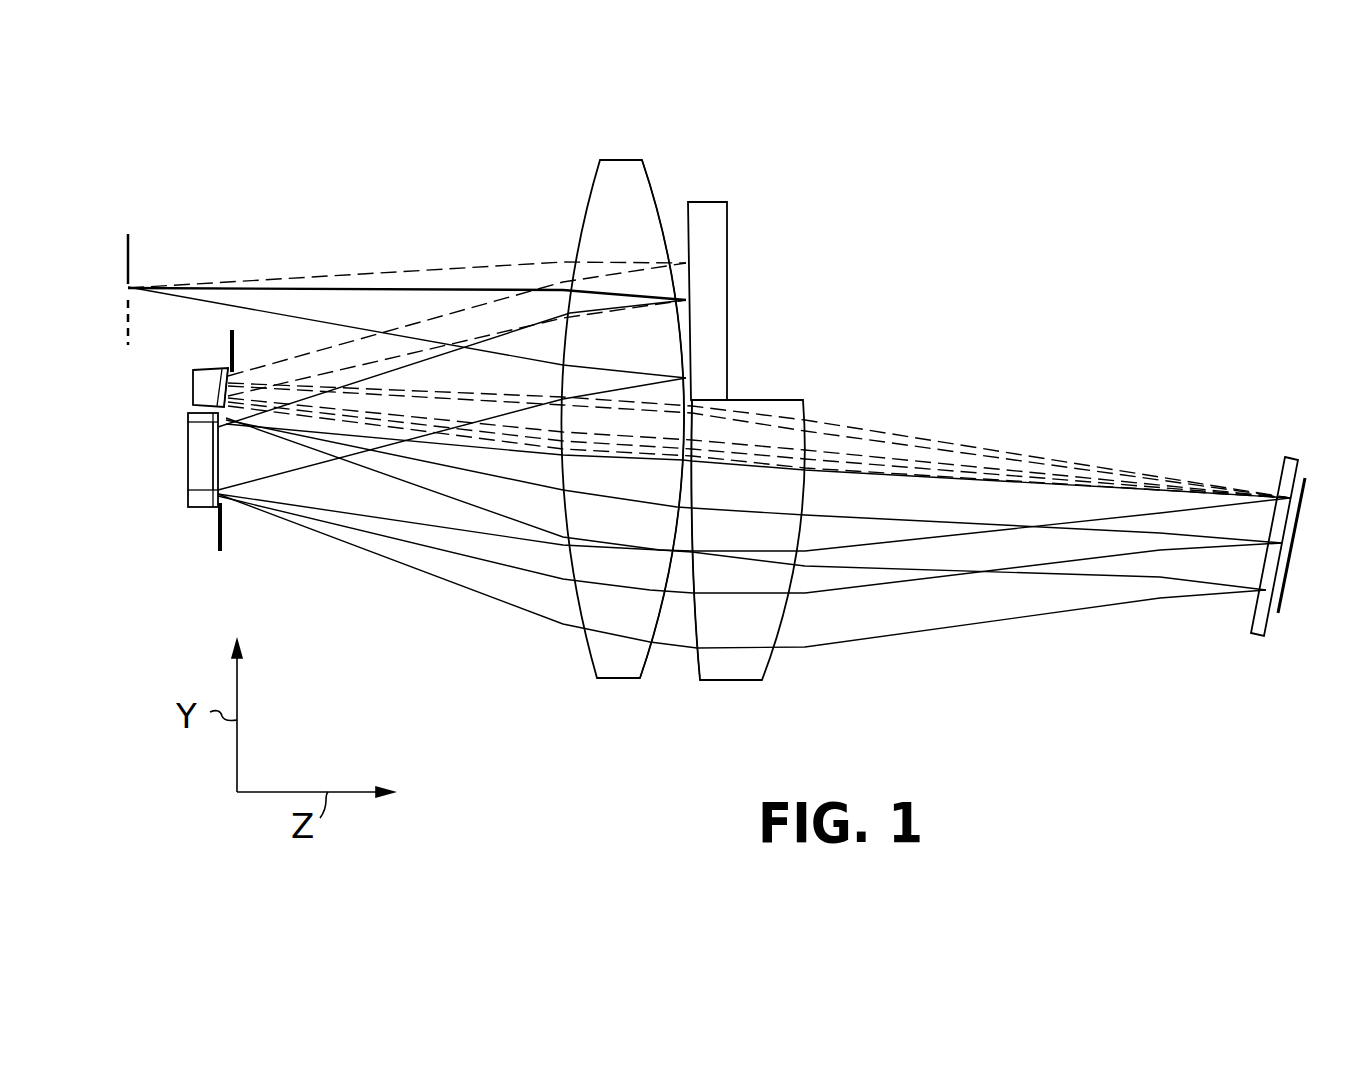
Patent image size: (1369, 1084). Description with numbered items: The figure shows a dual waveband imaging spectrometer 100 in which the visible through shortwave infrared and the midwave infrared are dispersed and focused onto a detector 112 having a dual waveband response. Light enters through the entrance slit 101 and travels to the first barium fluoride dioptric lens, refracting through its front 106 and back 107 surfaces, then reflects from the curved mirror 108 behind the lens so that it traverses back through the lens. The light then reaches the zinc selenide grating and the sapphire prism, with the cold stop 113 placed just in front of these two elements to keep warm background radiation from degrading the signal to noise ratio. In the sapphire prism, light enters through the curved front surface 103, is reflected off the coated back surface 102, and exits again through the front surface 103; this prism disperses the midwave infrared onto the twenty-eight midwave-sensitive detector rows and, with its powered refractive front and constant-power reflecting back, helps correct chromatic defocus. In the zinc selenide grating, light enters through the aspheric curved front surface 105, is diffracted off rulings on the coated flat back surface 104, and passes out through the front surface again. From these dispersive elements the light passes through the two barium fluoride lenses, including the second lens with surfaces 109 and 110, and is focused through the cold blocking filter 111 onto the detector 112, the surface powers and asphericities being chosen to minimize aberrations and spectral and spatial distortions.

The optical system 100 is at (952, 192).
The entrance slit 101 is at (131, 255).
The coated back surface of the sapphire prism 102 is at (193, 392).
The curved front surface of the sapphire prism 103 is at (229, 388).
The coated back surface of the zinc selenide grating 104 is at (188, 478).
The curved front surface of the zinc selenide grating prism 105 is at (220, 463).
The front surface of the first barium fluoride lens 106 is at (592, 192).
The back surface of the first barium fluoride lens 107 is at (655, 192).
The curved mirror 108 is at (735, 240).
The front surface of the second barium fluoride lens 109 is at (692, 660).
The back surface of the second barium fluoride lens 110 is at (775, 667).
The cold blocking filter 111 is at (1284, 470).
The detector 112 is at (1288, 590).
The cold stop 113 is at (217, 535).